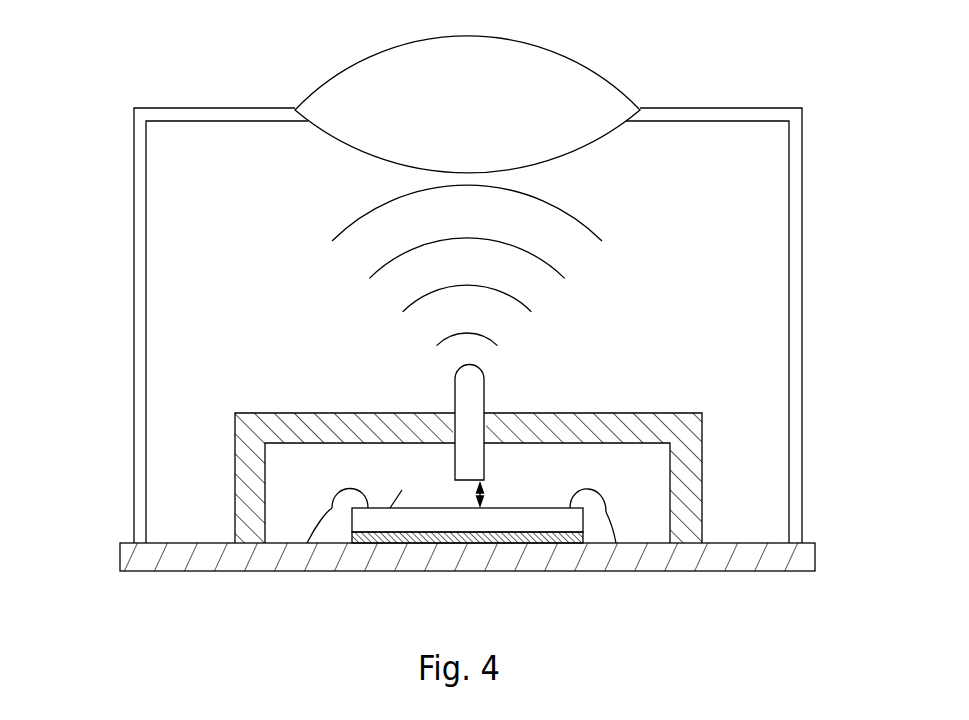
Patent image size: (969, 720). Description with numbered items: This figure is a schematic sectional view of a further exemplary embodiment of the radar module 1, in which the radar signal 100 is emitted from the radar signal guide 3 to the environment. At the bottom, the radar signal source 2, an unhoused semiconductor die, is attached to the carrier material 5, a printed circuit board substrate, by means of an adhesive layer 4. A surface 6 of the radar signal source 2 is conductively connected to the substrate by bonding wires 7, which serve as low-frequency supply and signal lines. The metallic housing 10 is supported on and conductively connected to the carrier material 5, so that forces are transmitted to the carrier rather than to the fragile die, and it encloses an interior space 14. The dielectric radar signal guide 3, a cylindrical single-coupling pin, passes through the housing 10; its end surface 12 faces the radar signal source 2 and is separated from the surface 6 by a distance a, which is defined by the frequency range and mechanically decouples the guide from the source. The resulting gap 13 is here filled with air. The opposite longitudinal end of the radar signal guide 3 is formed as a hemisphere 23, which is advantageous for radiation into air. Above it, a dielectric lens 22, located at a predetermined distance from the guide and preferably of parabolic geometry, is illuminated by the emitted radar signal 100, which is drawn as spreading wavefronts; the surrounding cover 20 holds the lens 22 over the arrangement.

The radar module 1 is at (166, 86).
The cover / cap 20 is at (263, 117).
The dielectric lens 22 is at (589, 97).
The radar signal 100 is at (605, 265).
The metallic housing 10 is at (236, 430).
The hemisphere 23 is at (473, 383).
The dielectric radar signal guide 3 is at (468, 463).
The interior space 14 is at (336, 473).
The surface 6 is at (390, 508).
The distance a is at (488, 493).
The radar signal source 2 is at (548, 520).
The adhesive layer 4 is at (370, 543).
The carrier material 5 is at (178, 555).
The bonding wires 7 is at (332, 505).
The end surface 12 is at (459, 487).
The gap 13 is at (441, 493).